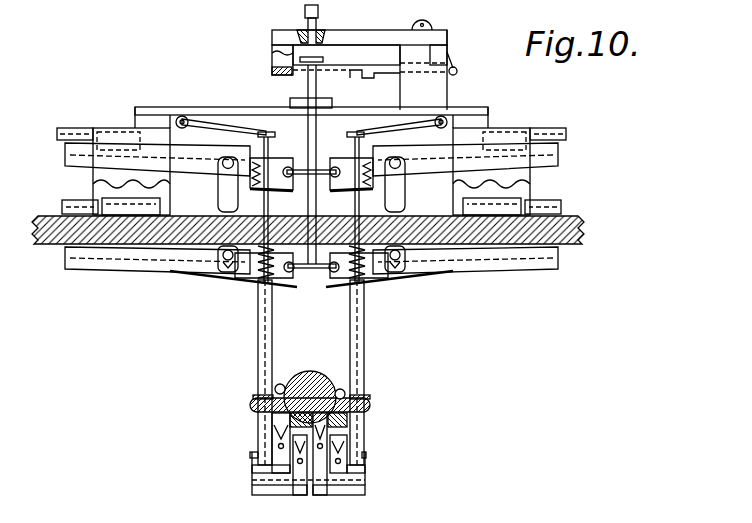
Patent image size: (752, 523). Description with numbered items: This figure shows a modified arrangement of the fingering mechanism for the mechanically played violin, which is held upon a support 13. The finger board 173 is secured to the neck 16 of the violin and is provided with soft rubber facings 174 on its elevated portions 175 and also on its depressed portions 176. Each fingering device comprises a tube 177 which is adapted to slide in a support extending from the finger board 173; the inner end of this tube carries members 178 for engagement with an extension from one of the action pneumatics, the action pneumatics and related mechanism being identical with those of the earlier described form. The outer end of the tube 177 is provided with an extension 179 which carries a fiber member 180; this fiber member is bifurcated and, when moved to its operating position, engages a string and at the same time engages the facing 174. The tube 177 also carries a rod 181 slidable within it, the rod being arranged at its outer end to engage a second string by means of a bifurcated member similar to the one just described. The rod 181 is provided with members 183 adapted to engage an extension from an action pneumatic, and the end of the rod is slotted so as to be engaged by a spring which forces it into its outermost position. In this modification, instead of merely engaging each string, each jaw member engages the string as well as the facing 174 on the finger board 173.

The support 13 is at (584, 233).
The neck 16 is at (311, 372).
The finger board 173 is at (344, 390).
The soft rubber facings 174 is at (270, 415).
The elevated portions 175 is at (372, 400).
The depressed portions 176 is at (281, 384).
The tube 177 is at (364, 320).
The members 178 is at (348, 285).
The extension 179 is at (365, 468).
The fiber member 180 is at (347, 447).
The rod 181 is at (356, 205).
The members 183 is at (356, 166).